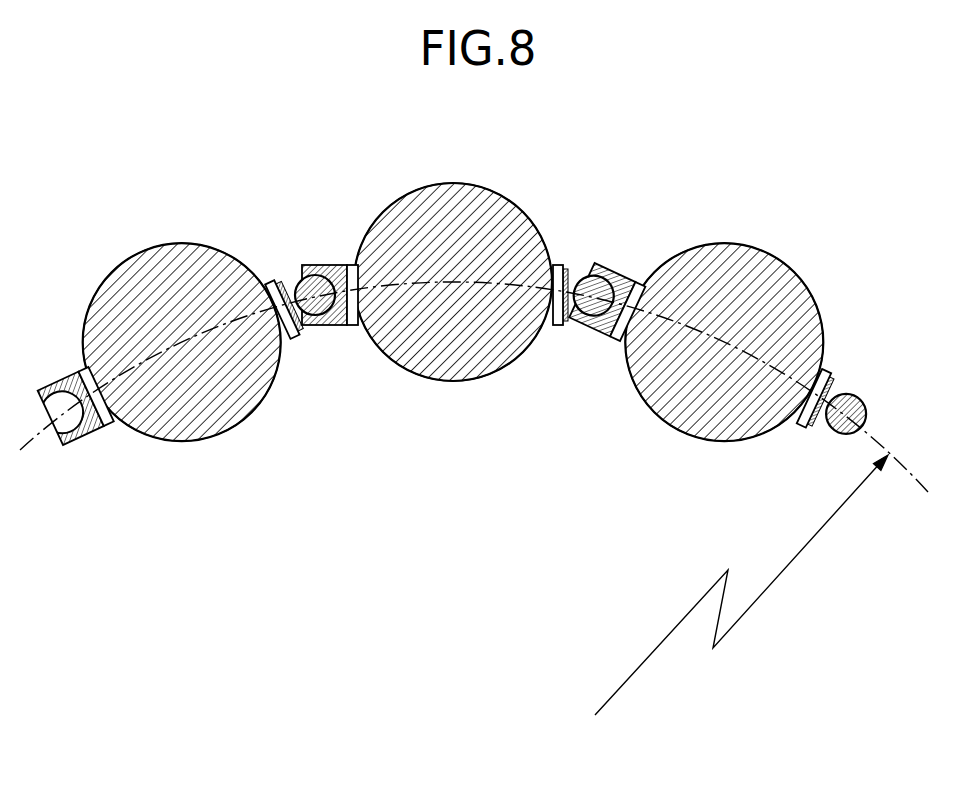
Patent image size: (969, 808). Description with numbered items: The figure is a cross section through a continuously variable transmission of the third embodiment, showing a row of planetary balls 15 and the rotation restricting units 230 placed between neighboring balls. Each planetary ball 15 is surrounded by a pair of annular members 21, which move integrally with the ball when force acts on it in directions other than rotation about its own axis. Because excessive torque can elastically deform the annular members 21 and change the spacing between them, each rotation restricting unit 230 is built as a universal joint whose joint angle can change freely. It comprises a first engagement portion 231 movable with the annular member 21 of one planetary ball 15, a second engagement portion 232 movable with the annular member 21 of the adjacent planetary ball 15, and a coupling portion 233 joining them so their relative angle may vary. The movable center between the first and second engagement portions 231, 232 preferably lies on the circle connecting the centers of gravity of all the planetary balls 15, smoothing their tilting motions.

The planetary ball 15 is at (182, 243).
The annular member 21 is at (291, 336).
The rotation restricting unit 230 is at (268, 158).
The first engagement portion 231 is at (281, 272).
The second engagement portion 232 is at (334, 264).
The coupling portion 233 is at (305, 277).